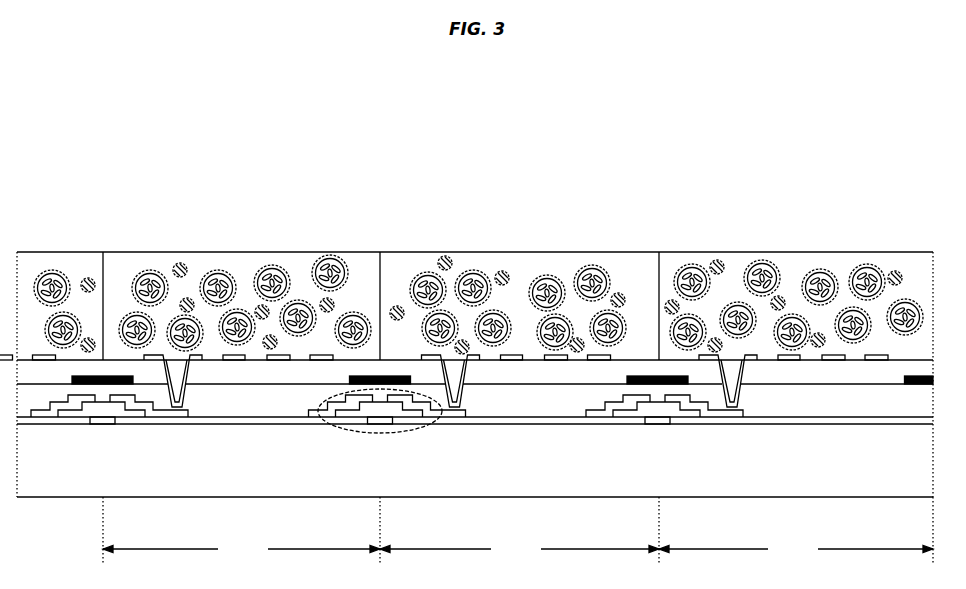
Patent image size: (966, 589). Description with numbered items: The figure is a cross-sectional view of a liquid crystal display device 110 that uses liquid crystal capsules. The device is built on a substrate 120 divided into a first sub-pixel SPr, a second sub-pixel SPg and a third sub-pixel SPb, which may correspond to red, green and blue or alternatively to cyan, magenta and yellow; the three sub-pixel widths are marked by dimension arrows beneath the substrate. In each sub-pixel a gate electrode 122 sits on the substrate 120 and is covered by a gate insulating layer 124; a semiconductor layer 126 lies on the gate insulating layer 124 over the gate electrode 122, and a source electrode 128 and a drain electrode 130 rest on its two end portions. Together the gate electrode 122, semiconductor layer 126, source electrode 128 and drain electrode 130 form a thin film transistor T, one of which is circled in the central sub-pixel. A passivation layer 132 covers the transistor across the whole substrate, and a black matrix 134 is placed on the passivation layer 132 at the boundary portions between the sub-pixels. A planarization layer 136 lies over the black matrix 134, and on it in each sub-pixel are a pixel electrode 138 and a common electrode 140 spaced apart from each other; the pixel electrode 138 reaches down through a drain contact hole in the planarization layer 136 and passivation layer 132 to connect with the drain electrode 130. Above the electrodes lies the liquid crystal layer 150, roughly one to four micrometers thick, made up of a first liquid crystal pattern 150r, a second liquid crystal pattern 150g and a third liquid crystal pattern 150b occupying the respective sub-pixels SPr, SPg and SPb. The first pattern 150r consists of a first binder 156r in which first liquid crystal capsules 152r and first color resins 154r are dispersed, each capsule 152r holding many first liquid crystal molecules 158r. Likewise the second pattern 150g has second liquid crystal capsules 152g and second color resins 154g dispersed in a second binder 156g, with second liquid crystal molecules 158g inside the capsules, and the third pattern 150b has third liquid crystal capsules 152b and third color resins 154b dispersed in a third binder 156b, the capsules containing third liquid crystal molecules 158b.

The liquid crystal display device 110 is at (512, 68).
The substrate 120 is at (889, 473).
The gate electrode 122 is at (380, 424).
The gate insulating layer 124 is at (490, 418).
The semiconductor layer 126 is at (352, 418).
The source electrode 128 is at (318, 412).
The drain electrode 130 is at (450, 412).
The passivation layer 132 is at (532, 412).
The black matrix 134 is at (122, 386).
The planarization layer 136 is at (266, 373).
The pixel electrode 138 is at (197, 363).
The common electrode 140 is at (237, 362).
The liquid crystal layer 150 is at (738, 148).
The first liquid crystal pattern 150r is at (128, 193).
The second liquid crystal pattern 150g is at (415, 199).
The third liquid crystal pattern 150b is at (681, 199).
The first liquid crystal capsule 152r is at (150, 270).
The first color resin 154r is at (180, 263).
The first binder 156r is at (225, 272).
The first liquid crystal molecule 158r is at (323, 255).
The second liquid crystal capsule 152g is at (424, 272).
The second color resin 154g is at (446, 256).
The second binder 156g is at (540, 277).
The second liquid crystal molecule 158g is at (594, 265).
The third liquid crystal capsule 152b is at (690, 264).
The third color resin 154b is at (717, 260).
The third binder 156b is at (814, 270).
The third liquid crystal molecule 158b is at (869, 264).
The thin film transistor T is at (413, 434).
The first sub-pixel SPr is at (241, 549).
The second sub-pixel SPg is at (519, 549).
The third sub-pixel SPb is at (796, 549).